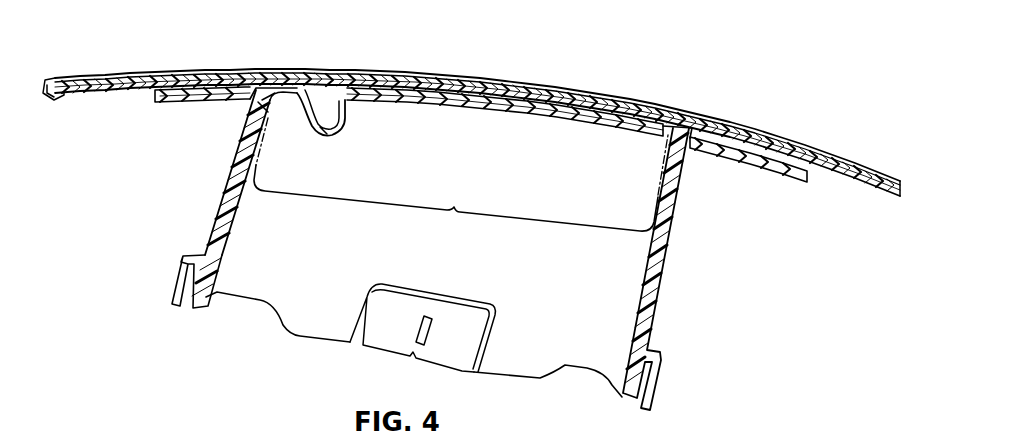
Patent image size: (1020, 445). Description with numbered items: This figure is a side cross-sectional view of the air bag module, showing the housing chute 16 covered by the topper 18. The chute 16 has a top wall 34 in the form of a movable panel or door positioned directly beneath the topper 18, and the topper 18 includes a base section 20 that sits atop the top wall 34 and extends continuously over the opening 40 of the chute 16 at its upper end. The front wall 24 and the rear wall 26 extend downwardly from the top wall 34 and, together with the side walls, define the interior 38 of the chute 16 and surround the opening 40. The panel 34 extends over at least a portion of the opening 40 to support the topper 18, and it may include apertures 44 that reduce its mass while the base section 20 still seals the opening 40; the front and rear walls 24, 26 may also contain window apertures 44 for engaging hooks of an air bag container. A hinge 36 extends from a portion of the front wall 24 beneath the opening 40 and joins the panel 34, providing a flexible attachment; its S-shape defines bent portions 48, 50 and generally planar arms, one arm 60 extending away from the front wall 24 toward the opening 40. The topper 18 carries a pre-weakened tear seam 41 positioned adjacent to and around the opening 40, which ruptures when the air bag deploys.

The housing chute 16 is at (135, 225).
The topper 18 is at (408, 70).
The base section 20 is at (490, 90).
The front wall 24 is at (232, 177).
The rear wall 26 is at (662, 273).
The top wall 34 is at (413, 103).
The hinge 36 is at (298, 92).
The interior 38 is at (541, 269).
The opening 40 is at (451, 214).
The tear seam 41 is at (247, 73).
The apertures 44 is at (380, 102).
The bent portion 48 is at (332, 100).
The bent portion 50 is at (313, 137).
The arm 60 is at (742, 156).